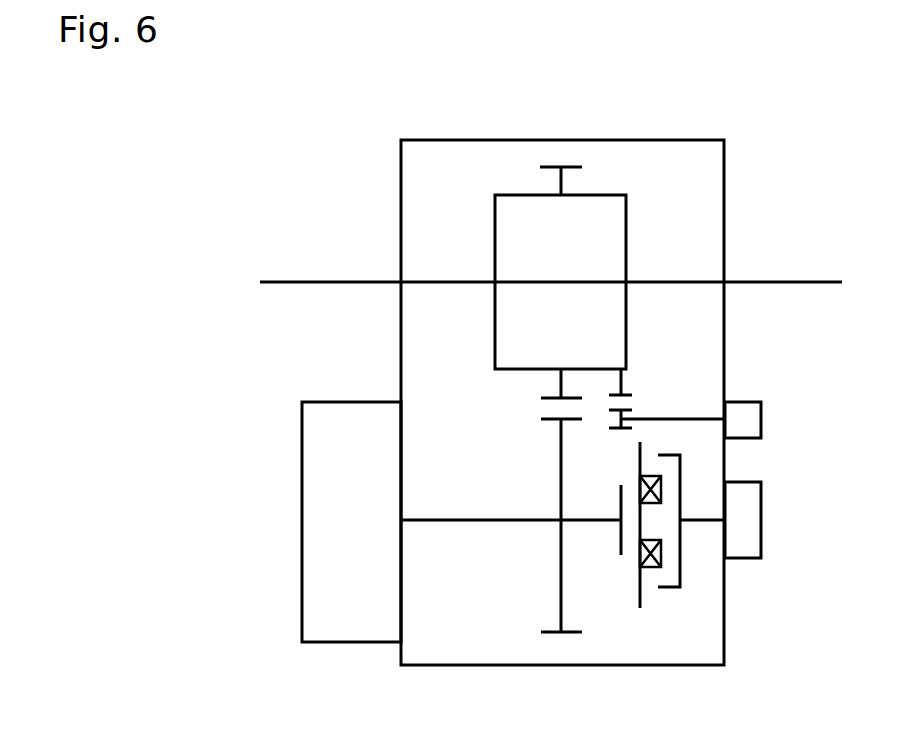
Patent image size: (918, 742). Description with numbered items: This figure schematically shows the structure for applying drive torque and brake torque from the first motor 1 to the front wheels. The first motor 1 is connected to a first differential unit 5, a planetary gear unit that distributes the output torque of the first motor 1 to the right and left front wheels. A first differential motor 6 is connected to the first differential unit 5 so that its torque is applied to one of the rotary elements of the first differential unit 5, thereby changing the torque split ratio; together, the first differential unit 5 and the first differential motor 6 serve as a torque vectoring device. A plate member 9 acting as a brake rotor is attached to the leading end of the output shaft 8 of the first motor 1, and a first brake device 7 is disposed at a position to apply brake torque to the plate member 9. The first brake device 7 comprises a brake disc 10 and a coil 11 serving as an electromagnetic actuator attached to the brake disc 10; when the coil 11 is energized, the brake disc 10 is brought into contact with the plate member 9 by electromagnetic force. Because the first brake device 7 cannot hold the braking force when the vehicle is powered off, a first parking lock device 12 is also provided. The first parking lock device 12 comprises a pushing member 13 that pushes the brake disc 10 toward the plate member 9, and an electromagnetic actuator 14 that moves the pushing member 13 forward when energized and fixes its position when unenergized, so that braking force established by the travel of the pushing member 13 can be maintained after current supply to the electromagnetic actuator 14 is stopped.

The first motor 1 is at (344, 627).
The first differential unit 5 is at (603, 203).
The first differential motor 6 is at (748, 420).
The first brake device 7 is at (623, 633).
The output shaft 8 is at (466, 520).
The plate member 9 is at (617, 552).
The brake disc 10 is at (642, 602).
The coil 11 is at (663, 560).
The first parking lock device 12 is at (697, 594).
The pushing member 13 is at (682, 467).
The electromagnetic actuator 14 is at (752, 521).